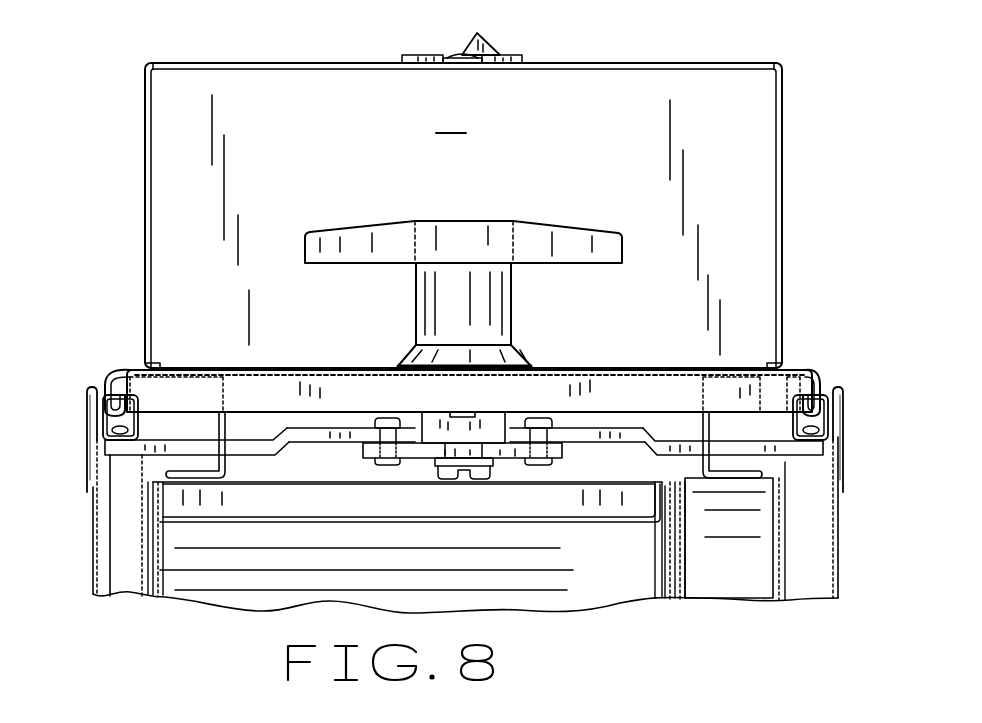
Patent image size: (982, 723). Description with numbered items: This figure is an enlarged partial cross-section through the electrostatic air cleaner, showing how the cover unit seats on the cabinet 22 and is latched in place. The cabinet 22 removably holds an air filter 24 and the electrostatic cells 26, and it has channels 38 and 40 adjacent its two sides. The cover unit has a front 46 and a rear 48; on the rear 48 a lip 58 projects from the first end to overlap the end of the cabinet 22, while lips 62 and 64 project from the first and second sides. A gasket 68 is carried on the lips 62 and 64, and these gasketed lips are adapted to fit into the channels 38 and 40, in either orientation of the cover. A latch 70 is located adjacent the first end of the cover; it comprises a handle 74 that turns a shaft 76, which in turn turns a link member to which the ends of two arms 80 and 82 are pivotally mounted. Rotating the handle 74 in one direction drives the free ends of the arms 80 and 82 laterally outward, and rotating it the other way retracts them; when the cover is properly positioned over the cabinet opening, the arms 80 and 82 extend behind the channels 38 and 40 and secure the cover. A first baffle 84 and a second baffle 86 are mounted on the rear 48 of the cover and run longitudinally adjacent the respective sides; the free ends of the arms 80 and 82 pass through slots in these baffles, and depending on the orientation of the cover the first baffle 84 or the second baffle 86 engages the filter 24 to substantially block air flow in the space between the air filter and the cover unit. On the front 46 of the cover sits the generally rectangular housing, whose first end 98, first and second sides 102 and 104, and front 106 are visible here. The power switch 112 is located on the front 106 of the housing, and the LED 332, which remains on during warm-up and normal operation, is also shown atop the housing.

The cabinet 22 is at (842, 568).
The air filter 24 is at (725, 558).
The electrostatic cells 26 is at (553, 506).
The channel 38 is at (833, 384).
The channel 40 is at (93, 384).
The front 46 is at (597, 368).
The rear 48 is at (585, 413).
The lip 58 is at (735, 393).
The lip 62 is at (809, 370).
The lip 64 is at (115, 377).
The gasket 68 is at (105, 422).
The latch 70 is at (572, 214).
The handle 74 is at (601, 247).
The shaft 76 is at (455, 433).
The arm 80 is at (764, 475).
The arm 82 is at (163, 456).
The first baffle 84 is at (702, 463).
The second baffle 86 is at (233, 467).
The first end 98 is at (451, 119).
The first side 102 is at (790, 158).
The second side 104 is at (145, 183).
The front 106 is at (659, 63).
The power switch 112 is at (487, 53).
The LED 332 is at (461, 54).